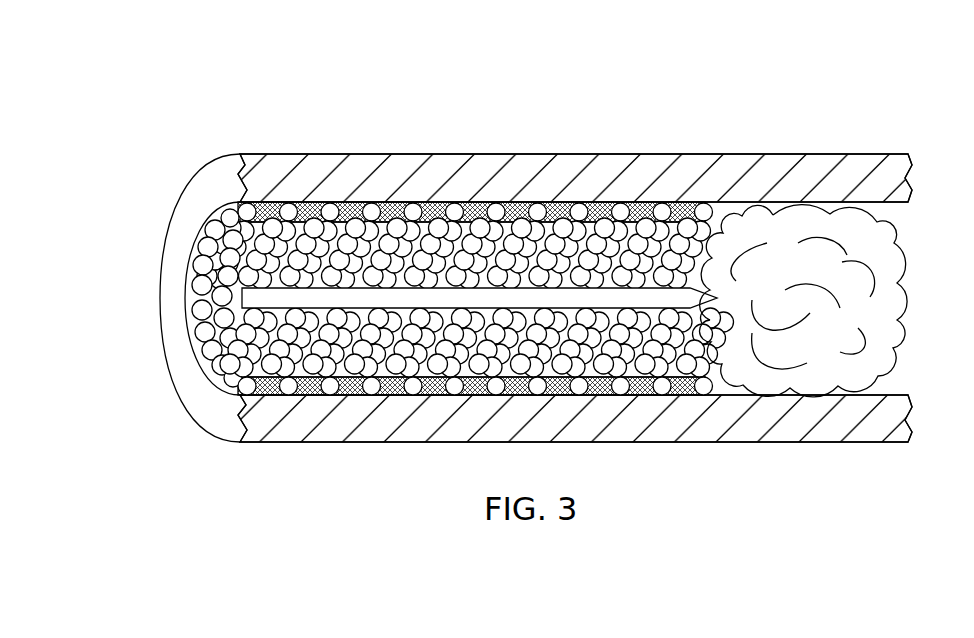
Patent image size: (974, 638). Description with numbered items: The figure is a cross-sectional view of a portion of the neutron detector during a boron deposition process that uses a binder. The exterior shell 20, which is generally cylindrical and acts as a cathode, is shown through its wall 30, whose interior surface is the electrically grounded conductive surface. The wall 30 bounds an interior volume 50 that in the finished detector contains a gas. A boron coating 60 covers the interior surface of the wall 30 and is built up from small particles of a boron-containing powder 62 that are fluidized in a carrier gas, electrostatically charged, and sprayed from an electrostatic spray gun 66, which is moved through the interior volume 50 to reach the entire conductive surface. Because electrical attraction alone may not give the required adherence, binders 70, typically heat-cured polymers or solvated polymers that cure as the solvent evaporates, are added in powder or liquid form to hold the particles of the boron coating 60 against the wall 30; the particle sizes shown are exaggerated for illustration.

The exterior shell 20 is at (630, 154).
The wall 30 is at (297, 154).
The interior volume 50 is at (395, 344).
The boron coating 60 is at (463, 258).
The boron-containing powder 62 is at (905, 271).
The electrostatic spray gun 66 is at (553, 310).
The binders 70 is at (354, 388).